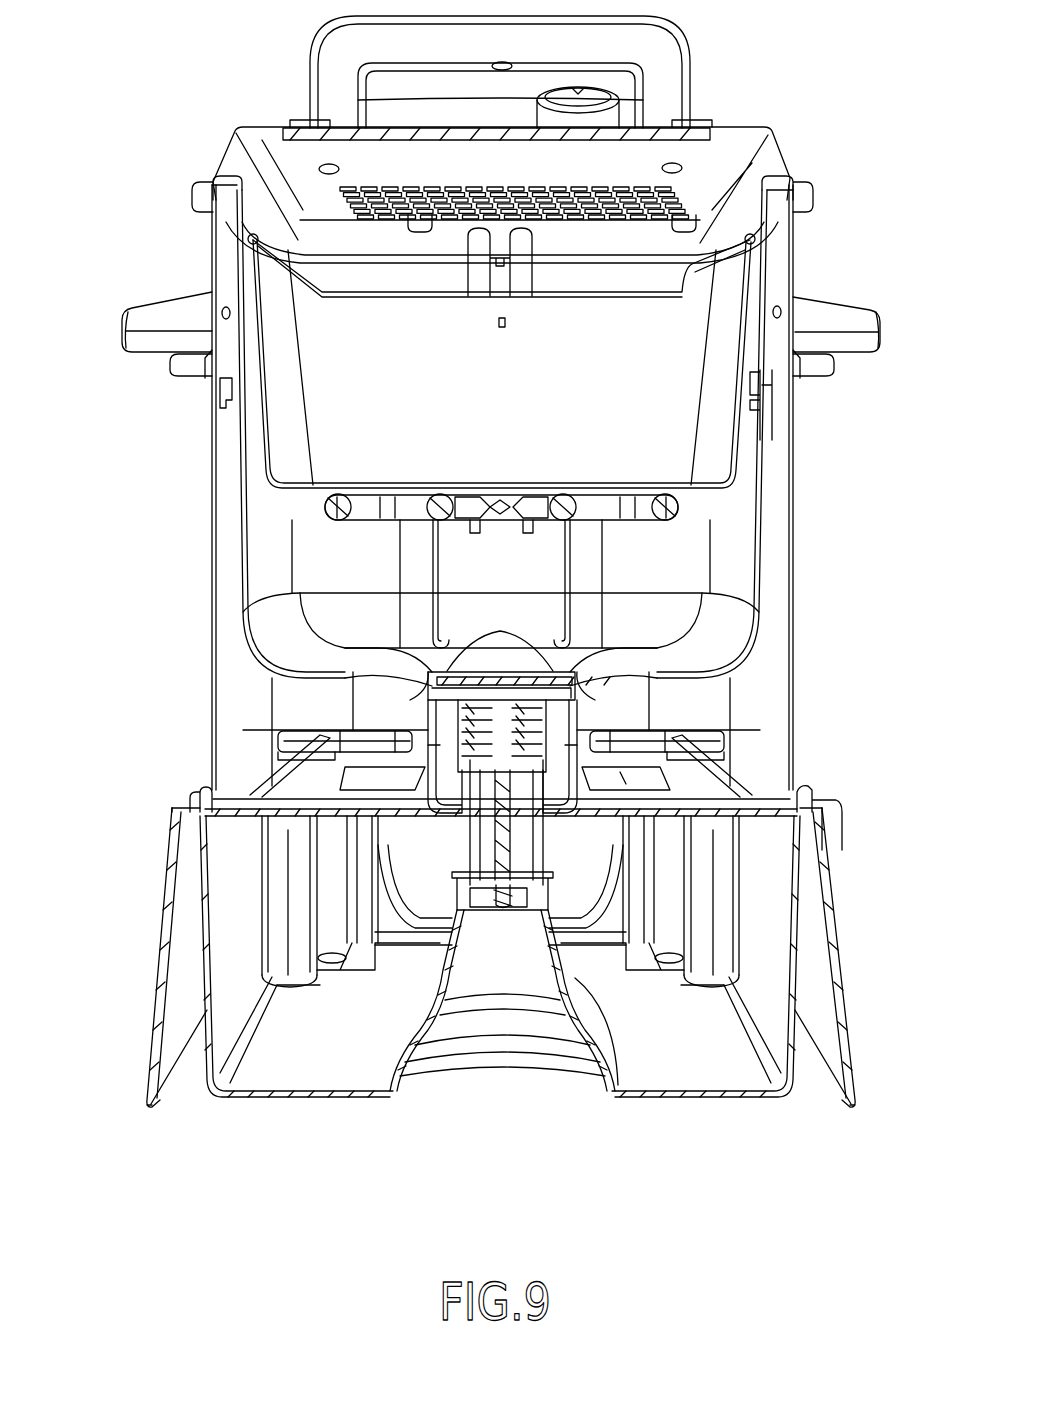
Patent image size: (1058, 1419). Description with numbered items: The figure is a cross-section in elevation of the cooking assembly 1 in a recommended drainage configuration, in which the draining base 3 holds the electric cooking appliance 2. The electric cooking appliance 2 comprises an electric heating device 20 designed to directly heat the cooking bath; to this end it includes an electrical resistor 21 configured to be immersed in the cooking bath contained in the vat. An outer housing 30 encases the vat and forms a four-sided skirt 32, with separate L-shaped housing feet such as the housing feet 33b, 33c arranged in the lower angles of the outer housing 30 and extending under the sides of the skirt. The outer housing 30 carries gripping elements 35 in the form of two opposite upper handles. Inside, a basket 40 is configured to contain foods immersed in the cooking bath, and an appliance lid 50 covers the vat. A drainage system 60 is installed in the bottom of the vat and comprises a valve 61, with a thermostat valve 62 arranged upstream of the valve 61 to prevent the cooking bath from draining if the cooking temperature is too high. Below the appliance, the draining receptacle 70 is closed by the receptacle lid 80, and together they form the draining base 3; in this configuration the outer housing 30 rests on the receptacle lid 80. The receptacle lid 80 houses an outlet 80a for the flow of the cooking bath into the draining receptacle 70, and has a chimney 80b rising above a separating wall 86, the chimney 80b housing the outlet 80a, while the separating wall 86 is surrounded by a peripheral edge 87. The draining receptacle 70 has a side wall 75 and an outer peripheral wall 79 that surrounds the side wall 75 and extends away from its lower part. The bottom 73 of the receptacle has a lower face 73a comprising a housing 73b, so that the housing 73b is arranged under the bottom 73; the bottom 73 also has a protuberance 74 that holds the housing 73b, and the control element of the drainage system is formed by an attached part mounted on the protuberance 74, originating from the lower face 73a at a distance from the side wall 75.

The cooking assembly 1 is at (852, 1142).
The electric cooking appliance 2 is at (834, 571).
The draining base 3 is at (884, 966).
The electric heating device 20 is at (305, 507).
The electrical resistor 21 is at (695, 500).
The outer housing 30 is at (790, 424).
The skirt 32 is at (772, 614).
The housing foot 33b is at (695, 730).
The housing foot 33c is at (333, 732).
The gripping elements 35 is at (124, 332).
The basket 40 is at (740, 452).
The appliance lid 50 is at (737, 143).
The drainage system 60 is at (447, 748).
The valve 61 is at (465, 895).
The thermostat valve 62 is at (423, 665).
The draining receptacle 70 is at (709, 1050).
The bottom of the receptacle 73 is at (295, 1062).
The lower face 73a is at (360, 1084).
The housing 73b is at (505, 1028).
The protuberance 74 is at (590, 1008).
The side wall 75 is at (821, 912).
The outer peripheral wall 79 is at (851, 1027).
The receptacle lid 80 is at (708, 790).
The outlet 80a is at (445, 852).
The chimney 80b is at (700, 745).
The separating wall 86 is at (453, 800).
The peripheral edge 87 is at (812, 778).